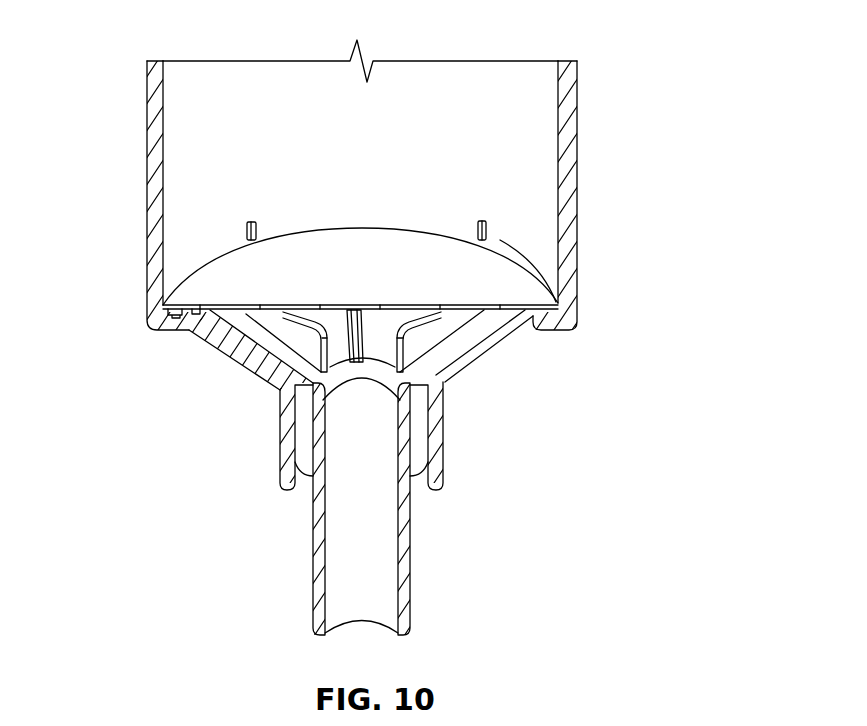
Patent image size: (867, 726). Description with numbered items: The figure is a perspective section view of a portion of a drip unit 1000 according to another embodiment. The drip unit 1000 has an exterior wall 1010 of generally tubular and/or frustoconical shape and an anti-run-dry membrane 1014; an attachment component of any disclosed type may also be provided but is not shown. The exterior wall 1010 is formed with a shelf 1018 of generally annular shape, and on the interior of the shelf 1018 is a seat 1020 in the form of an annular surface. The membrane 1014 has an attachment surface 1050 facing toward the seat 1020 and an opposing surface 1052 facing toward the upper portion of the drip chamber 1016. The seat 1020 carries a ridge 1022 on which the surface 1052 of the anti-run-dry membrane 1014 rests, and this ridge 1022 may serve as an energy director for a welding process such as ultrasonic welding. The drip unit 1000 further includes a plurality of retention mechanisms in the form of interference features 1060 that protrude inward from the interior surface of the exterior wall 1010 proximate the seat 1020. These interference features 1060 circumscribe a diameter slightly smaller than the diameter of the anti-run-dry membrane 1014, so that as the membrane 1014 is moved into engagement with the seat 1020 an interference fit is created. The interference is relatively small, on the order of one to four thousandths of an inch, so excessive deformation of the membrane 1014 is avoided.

The drip unit 1000 is at (562, 34).
The exterior wall 1010 is at (138, 166).
The drip chamber 1016 is at (393, 142).
The attachment surface 1050 is at (418, 282).
The ridge 1022 is at (535, 300).
The interference features 1060 is at (250, 222).
The seat 1020 is at (213, 309).
The shelf 1018 is at (187, 342).
The opposing surface 1052 is at (250, 336).
The anti-run-dry membrane 1014 is at (489, 322).